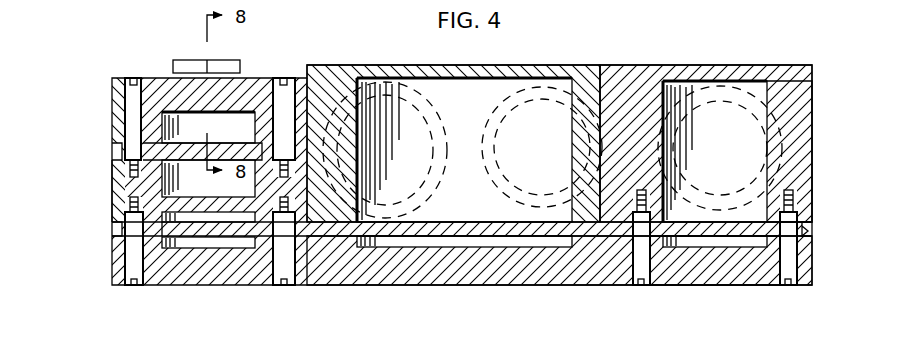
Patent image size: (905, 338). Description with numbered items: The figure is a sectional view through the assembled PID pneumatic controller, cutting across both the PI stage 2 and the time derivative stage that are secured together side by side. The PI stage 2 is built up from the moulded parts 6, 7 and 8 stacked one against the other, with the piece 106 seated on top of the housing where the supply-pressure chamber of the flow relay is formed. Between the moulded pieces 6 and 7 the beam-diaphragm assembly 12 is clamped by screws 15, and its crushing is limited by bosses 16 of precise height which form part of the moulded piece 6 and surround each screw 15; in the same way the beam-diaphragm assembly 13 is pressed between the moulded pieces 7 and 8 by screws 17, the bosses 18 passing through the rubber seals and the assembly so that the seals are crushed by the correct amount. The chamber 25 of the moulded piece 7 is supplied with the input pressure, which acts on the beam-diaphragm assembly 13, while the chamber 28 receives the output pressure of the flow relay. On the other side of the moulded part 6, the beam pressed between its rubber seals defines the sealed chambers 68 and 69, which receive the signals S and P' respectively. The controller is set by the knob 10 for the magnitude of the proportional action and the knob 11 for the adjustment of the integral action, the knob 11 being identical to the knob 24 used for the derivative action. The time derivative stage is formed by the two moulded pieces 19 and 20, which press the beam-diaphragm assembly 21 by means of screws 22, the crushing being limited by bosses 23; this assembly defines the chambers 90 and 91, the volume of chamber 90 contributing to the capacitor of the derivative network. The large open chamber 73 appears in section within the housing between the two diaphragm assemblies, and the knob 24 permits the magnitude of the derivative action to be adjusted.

The PI stage 2 is at (505, 64).
The moulded part 6 is at (500, 287).
The moulded part 7 is at (112, 188).
The moulded part 8 is at (112, 100).
The knob 10 is at (440, 178).
The knob 11 is at (492, 101).
The beam-diaphragm assembly 12 is at (112, 229).
The beam-diaphragm assembly 13 is at (112, 151).
The screws 15 is at (128, 288).
The bosses 16 is at (146, 232).
The screws 17 is at (128, 77).
The bosses 18 is at (250, 146).
The moulded piece 19 is at (728, 278).
The moulded piece 20 is at (752, 65).
The beam-diaphragm assembly 21 is at (812, 229).
The screws 22 is at (787, 287).
The bosses 23 is at (668, 240).
The knob 24 is at (812, 137).
The chamber 25 is at (224, 197).
The chamber 28 is at (255, 120).
The sealed chamber 68 is at (240, 242).
The sealed chamber 69 is at (208, 217).
The main chamber 73 is at (526, 132).
The chamber 90 is at (726, 126).
The chamber 91 is at (712, 242).
The piece 106 is at (240, 68).